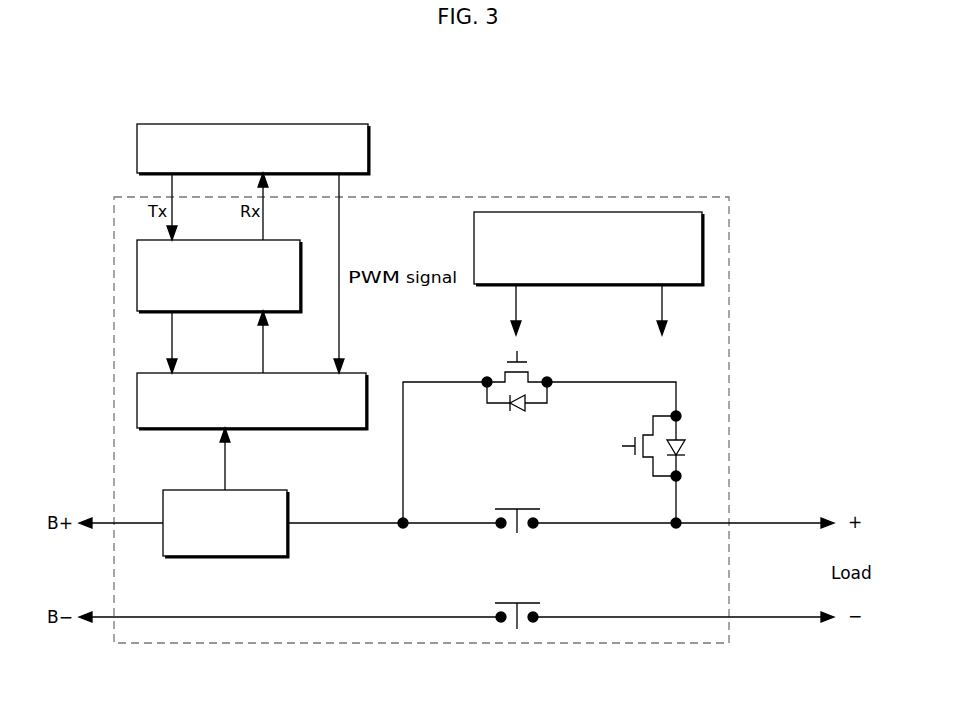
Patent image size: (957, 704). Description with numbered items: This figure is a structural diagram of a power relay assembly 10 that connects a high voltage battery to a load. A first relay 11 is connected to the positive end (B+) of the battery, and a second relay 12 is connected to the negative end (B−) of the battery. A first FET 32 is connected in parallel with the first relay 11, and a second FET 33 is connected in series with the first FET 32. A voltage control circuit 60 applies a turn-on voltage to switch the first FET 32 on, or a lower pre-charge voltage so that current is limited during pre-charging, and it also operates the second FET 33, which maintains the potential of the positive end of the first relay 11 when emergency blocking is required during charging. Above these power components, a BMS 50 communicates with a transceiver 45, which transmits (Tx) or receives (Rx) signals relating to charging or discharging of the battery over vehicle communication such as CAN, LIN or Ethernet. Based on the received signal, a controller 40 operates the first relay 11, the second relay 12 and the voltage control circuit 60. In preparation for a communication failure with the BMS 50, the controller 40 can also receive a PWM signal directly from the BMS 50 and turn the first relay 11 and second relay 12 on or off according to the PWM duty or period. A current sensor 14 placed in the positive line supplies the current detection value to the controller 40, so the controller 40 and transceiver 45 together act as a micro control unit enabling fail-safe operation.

The power relay assembly 10 is at (713, 197).
The first relay 11 is at (537, 509).
The second relay 12 is at (537, 603).
The current sensor 14 is at (272, 490).
The first FET 32 is at (537, 403).
The second FET 33 is at (653, 470).
The controller 40 is at (360, 373).
The transceiver 45 is at (288, 240).
The BMS 50 is at (343, 124).
The voltage control circuit 60 is at (474, 240).